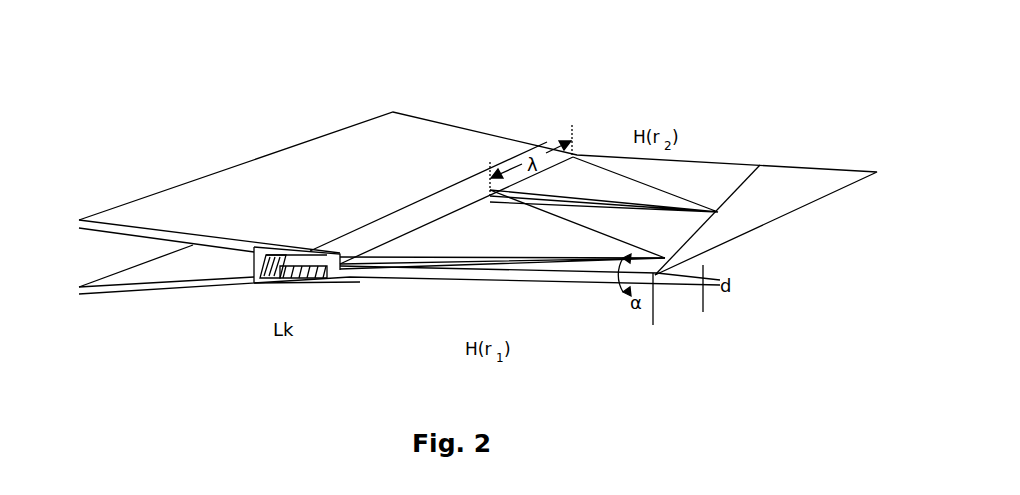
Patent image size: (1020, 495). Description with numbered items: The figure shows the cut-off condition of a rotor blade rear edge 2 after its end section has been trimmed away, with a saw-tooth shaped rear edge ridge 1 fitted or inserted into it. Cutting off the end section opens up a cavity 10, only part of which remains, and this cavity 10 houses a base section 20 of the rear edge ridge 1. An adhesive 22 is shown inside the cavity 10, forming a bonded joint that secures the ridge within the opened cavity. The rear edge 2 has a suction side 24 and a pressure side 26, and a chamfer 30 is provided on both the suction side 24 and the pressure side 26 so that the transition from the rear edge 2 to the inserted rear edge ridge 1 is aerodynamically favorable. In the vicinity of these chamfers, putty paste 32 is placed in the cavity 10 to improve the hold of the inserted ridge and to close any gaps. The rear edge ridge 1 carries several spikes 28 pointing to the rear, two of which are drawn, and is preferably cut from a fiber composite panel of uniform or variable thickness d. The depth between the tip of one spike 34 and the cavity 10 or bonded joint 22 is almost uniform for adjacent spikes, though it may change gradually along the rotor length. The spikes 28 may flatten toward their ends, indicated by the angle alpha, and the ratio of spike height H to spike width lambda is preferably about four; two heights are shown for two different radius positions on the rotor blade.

The rear edge ridge 1 is at (350, 278).
The rear edge 2 is at (476, 104).
The cavity 10 is at (293, 251).
The base section 20 is at (293, 283).
The adhesive 22 is at (254, 273).
The suction side 24 is at (209, 221).
The pressure side 26 is at (128, 306).
The spikes 28 is at (529, 213).
The chamfer 30 is at (436, 196).
The putty paste 32 is at (311, 253).
The tip of spike 34 is at (668, 257).